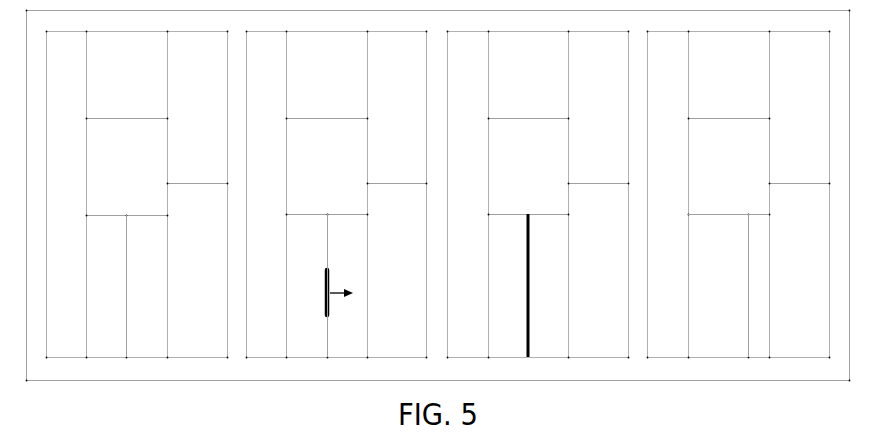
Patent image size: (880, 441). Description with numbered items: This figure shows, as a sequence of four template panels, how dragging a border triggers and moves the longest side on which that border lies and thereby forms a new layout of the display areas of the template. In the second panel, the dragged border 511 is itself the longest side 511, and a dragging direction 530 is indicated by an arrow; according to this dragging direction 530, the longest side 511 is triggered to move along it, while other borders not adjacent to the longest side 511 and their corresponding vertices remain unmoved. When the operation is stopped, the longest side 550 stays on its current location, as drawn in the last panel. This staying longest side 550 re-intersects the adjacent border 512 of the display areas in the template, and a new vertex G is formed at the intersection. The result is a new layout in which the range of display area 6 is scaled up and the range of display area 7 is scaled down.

The display area 6 is at (106, 286).
The display area 7 is at (146, 286).
The dragging direction 530 is at (345, 289).
The border 511 is at (328, 335).
The border 512 is at (729, 213).
The vertex G is at (749, 208).
The longest side 550 is at (748, 335).